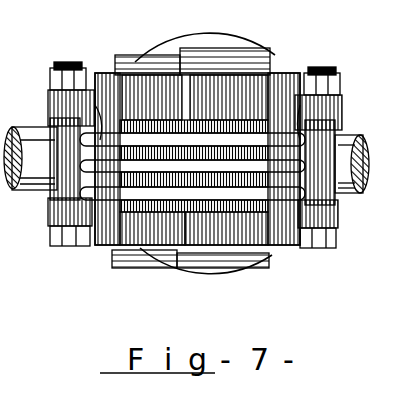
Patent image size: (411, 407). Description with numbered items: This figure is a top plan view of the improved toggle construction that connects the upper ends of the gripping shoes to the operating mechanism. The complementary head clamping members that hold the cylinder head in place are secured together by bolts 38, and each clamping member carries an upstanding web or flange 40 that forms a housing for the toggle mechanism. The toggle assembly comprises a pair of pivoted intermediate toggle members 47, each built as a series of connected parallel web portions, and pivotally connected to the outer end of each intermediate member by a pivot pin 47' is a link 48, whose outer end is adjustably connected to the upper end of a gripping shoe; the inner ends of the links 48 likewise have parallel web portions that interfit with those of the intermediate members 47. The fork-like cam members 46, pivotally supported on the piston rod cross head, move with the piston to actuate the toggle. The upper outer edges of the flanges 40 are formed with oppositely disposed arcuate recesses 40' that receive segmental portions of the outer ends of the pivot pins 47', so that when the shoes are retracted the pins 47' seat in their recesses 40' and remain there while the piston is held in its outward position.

The bolts 38 is at (66, 75).
The upstanding web or flange 40 is at (191, 156).
The arcuate recesses 40' is at (252, 73).
The fork-like cam members 46 is at (150, 128).
The intermediate toggle members 47 is at (182, 157).
The pivot pins 47' is at (172, 201).
The links 48 is at (34, 190).